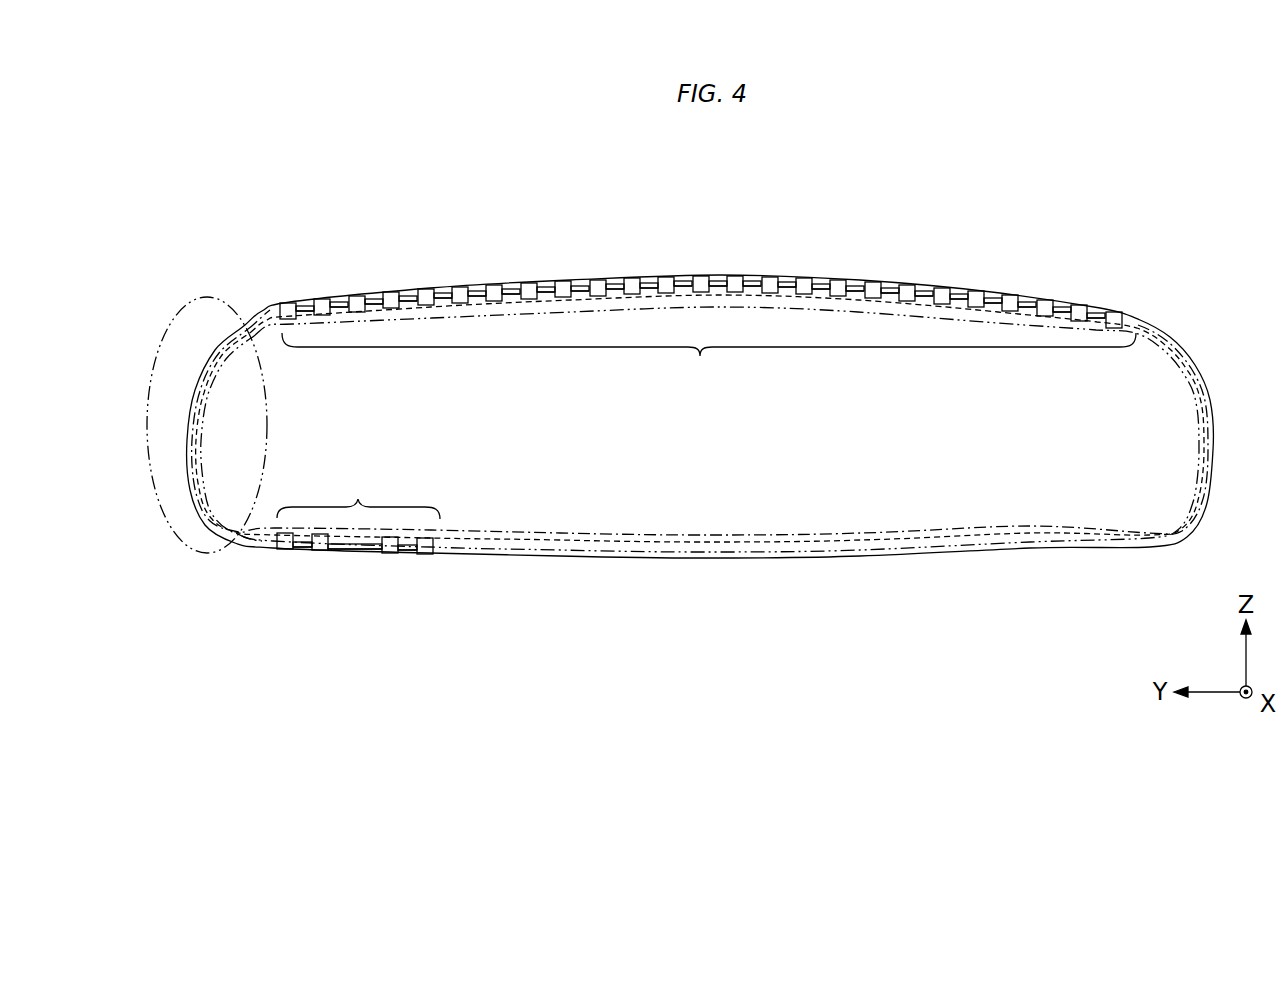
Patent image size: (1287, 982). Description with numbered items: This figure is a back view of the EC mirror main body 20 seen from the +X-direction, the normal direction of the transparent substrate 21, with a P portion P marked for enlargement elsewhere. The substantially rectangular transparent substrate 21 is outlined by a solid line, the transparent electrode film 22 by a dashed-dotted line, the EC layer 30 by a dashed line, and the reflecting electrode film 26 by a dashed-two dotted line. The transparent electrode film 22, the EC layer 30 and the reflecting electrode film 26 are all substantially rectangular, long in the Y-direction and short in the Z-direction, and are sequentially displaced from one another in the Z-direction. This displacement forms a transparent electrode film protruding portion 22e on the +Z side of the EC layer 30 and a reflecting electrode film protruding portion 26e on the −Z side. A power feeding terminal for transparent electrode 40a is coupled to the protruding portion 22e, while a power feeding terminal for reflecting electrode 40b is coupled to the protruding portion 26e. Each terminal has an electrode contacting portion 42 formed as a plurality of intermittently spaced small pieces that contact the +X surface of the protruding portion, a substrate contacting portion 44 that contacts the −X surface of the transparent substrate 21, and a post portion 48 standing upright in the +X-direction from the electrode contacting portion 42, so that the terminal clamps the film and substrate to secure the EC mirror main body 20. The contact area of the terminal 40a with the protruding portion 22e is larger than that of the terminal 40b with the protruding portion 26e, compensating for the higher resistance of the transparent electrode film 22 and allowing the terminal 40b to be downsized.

The EC mirror main body 20 is at (1195, 296).
The transparent substrate 21 is at (1211, 420).
The transparent electrode film 22 is at (1141, 323).
The transparent electrode film protruding portion 22e is at (268, 305).
The reflecting electrode film 26 is at (1178, 356).
The reflecting electrode film protruding portion 26e is at (257, 535).
The EC layer 30 is at (1163, 331).
The power feeding terminal for transparent electrode 40a is at (709, 362).
The power feeding terminal for reflecting electrode 40b is at (358, 497).
The electrode contacting portion 42 is at (529, 283).
The substrate contacting portion 44 is at (577, 286).
The post portion 48 is at (353, 305).
The P portion P is at (166, 338).